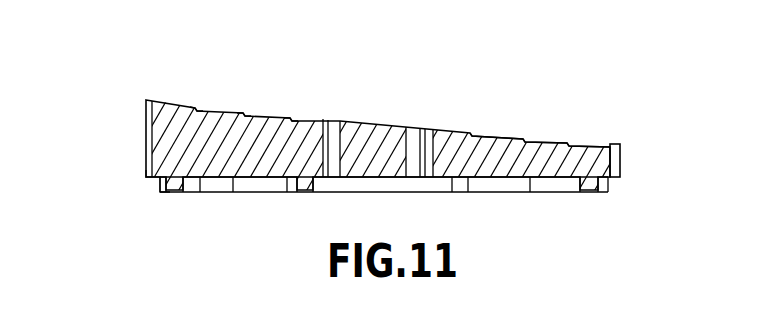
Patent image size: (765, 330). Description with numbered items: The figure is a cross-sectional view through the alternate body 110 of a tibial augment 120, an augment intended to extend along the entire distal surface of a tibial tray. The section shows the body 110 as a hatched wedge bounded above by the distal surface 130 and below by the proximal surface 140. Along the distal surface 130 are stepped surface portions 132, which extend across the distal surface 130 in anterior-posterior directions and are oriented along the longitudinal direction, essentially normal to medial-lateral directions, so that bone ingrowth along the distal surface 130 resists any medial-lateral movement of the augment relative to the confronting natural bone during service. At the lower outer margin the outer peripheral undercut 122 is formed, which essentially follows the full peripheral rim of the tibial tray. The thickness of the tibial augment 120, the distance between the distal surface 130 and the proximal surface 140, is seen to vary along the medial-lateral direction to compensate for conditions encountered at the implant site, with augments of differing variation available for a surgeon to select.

The tibial augment 120 is at (352, 153).
The body 110 is at (160, 141).
The outer peripheral undercut 122 is at (158, 184).
The distal surface 130 is at (495, 133).
The surface portions 132 is at (197, 107).
The proximal surface 140 is at (217, 195).